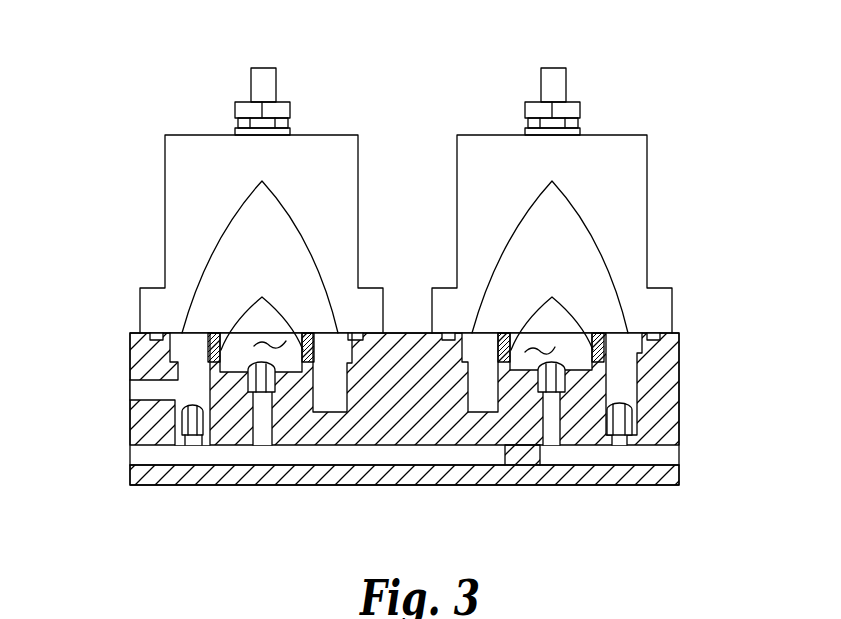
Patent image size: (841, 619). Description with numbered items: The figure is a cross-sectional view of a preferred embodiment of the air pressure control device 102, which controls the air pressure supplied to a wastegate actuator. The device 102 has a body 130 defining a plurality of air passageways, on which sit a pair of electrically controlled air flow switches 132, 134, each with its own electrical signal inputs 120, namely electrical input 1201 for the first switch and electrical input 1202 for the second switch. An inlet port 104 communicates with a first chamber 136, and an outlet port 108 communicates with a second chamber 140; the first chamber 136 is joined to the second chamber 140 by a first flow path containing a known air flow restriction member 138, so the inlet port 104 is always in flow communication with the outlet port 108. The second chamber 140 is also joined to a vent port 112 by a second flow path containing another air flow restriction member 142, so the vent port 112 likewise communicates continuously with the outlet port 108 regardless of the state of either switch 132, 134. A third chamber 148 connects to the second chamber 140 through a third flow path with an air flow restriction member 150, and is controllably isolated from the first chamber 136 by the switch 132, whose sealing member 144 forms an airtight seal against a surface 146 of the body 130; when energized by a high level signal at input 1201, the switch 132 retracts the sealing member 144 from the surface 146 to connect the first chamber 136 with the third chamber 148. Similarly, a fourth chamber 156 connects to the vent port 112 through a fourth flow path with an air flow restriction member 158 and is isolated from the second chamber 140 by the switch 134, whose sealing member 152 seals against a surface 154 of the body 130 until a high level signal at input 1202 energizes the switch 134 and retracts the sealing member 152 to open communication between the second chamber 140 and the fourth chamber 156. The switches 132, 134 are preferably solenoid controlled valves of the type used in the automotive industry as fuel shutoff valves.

The air pressure control device 102 is at (407, 76).
The inlet port 104 is at (130, 392).
The outlet port 108 is at (130, 458).
The vent port 112 is at (680, 458).
The electrical signal inputs 120 is at (428, 70).
The electrical signal input 1201 is at (265, 68).
The electrical signal input 1202 is at (556, 68).
The body 130 is at (540, 486).
The air flow switch 132 is at (172, 134).
The air flow switch 134 is at (636, 134).
The first chamber 136 is at (260, 238).
The air flow restriction member 138 is at (182, 420).
The second chamber 140 is at (550, 238).
The air flow restriction member 142 is at (637, 427).
The sealing member 144 is at (262, 304).
The surface 146 is at (221, 347).
The third chamber 148 is at (268, 350).
The air flow restriction member 150 is at (276, 393).
The sealing member 152 is at (552, 304).
The surface 154 is at (503, 347).
The fourth chamber 156 is at (537, 354).
The air flow restriction member 158 is at (565, 385).